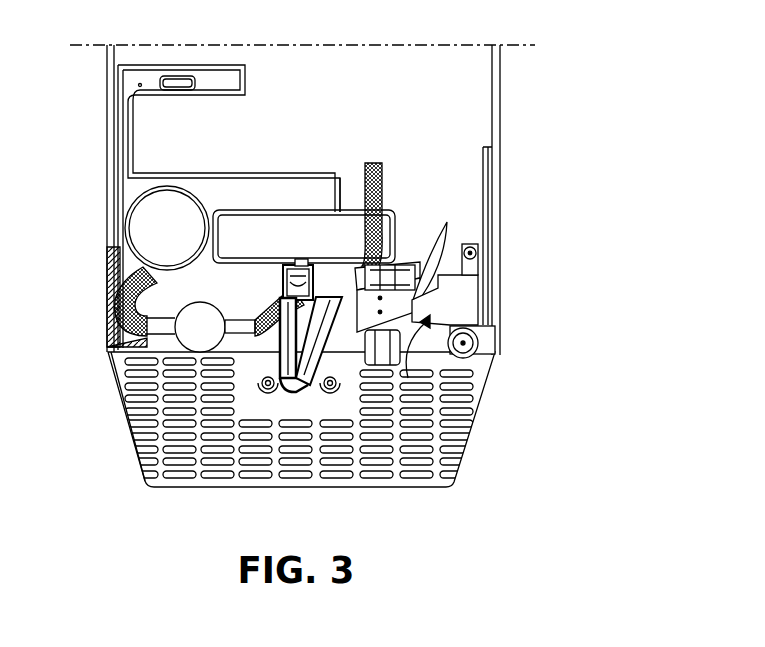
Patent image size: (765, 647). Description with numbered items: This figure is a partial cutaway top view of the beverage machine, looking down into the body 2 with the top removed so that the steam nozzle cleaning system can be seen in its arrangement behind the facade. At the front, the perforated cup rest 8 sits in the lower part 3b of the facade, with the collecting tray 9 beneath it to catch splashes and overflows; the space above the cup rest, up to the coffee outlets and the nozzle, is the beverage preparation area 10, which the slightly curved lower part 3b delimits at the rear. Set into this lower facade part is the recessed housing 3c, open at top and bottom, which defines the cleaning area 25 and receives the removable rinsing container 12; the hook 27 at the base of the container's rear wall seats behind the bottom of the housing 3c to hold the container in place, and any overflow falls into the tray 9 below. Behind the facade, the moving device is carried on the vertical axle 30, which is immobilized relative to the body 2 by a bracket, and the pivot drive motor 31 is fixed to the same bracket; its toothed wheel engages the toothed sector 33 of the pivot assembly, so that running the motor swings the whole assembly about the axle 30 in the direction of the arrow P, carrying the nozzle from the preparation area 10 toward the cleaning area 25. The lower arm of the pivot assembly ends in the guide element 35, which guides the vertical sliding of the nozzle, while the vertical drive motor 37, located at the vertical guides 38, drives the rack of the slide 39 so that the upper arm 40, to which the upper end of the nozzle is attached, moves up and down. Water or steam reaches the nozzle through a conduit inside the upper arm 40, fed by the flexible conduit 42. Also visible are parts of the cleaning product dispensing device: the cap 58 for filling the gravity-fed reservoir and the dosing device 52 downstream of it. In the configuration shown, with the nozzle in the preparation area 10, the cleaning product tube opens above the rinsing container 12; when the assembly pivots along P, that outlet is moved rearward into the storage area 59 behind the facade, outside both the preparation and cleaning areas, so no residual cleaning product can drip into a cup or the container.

The body 2 is at (104, 60).
The lower part of the facade 3b is at (120, 350).
The recessed housing 3c is at (285, 283).
The cup rest 8 is at (188, 458).
The collecting tray 9 is at (332, 213).
The beverage preparation area 10 is at (240, 390).
The rinsing container 12 is at (288, 265).
The cleaning area 25 is at (262, 290).
The hook 27 is at (300, 268).
The vertical axle 30 is at (465, 343).
The pivot drive motor 31 is at (450, 314).
The toothed sector 33 is at (398, 360).
The guide element 35 is at (298, 395).
The vertical drive motor 37 is at (368, 332).
The vertical guides 38 is at (439, 248).
The slide 39 is at (396, 262).
The upper arm 40 is at (348, 345).
The flexible conduit 42 is at (376, 168).
The dosing device 52 is at (202, 327).
The cap 58 is at (167, 230).
The storage area 59 is at (314, 218).
The arrow P is at (422, 372).